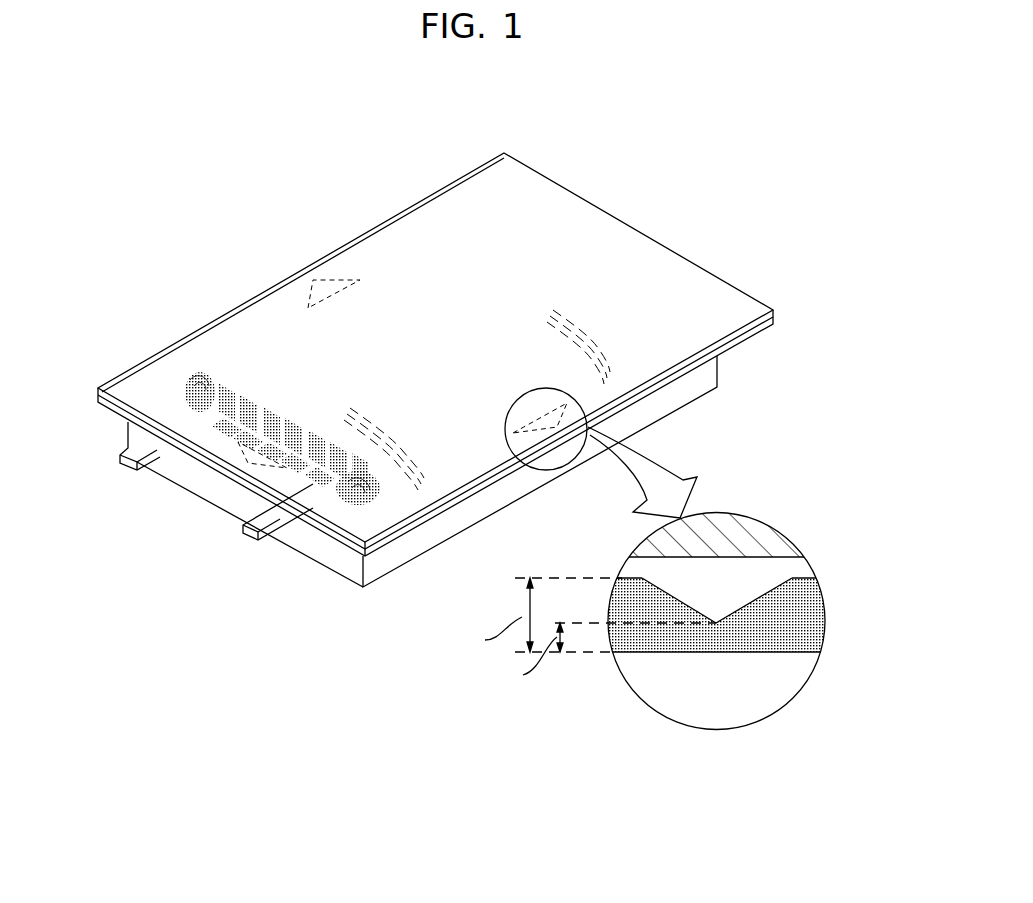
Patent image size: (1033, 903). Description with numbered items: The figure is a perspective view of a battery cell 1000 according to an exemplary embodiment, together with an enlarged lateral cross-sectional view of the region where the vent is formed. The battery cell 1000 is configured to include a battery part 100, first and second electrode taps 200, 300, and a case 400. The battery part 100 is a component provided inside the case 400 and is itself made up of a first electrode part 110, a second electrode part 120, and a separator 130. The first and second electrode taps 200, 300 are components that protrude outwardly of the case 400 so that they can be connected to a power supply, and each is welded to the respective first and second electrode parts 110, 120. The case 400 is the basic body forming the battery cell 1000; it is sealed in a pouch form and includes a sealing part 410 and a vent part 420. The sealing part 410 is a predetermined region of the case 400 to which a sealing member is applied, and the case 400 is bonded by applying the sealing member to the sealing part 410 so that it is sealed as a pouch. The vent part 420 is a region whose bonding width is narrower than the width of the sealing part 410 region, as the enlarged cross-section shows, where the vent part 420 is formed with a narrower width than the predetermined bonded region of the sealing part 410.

The battery cell 1000 is at (222, 240).
The battery part 100 is at (260, 602).
The first electrode part 110 is at (322, 440).
The second electrode part 120 is at (317, 445).
The separator 130 is at (313, 443).
The first electrode tap 200 is at (193, 423).
The second electrode tap 300 is at (323, 493).
The case 400 is at (562, 237).
The sealing part 410 is at (812, 667).
The vent part 420 is at (710, 667).